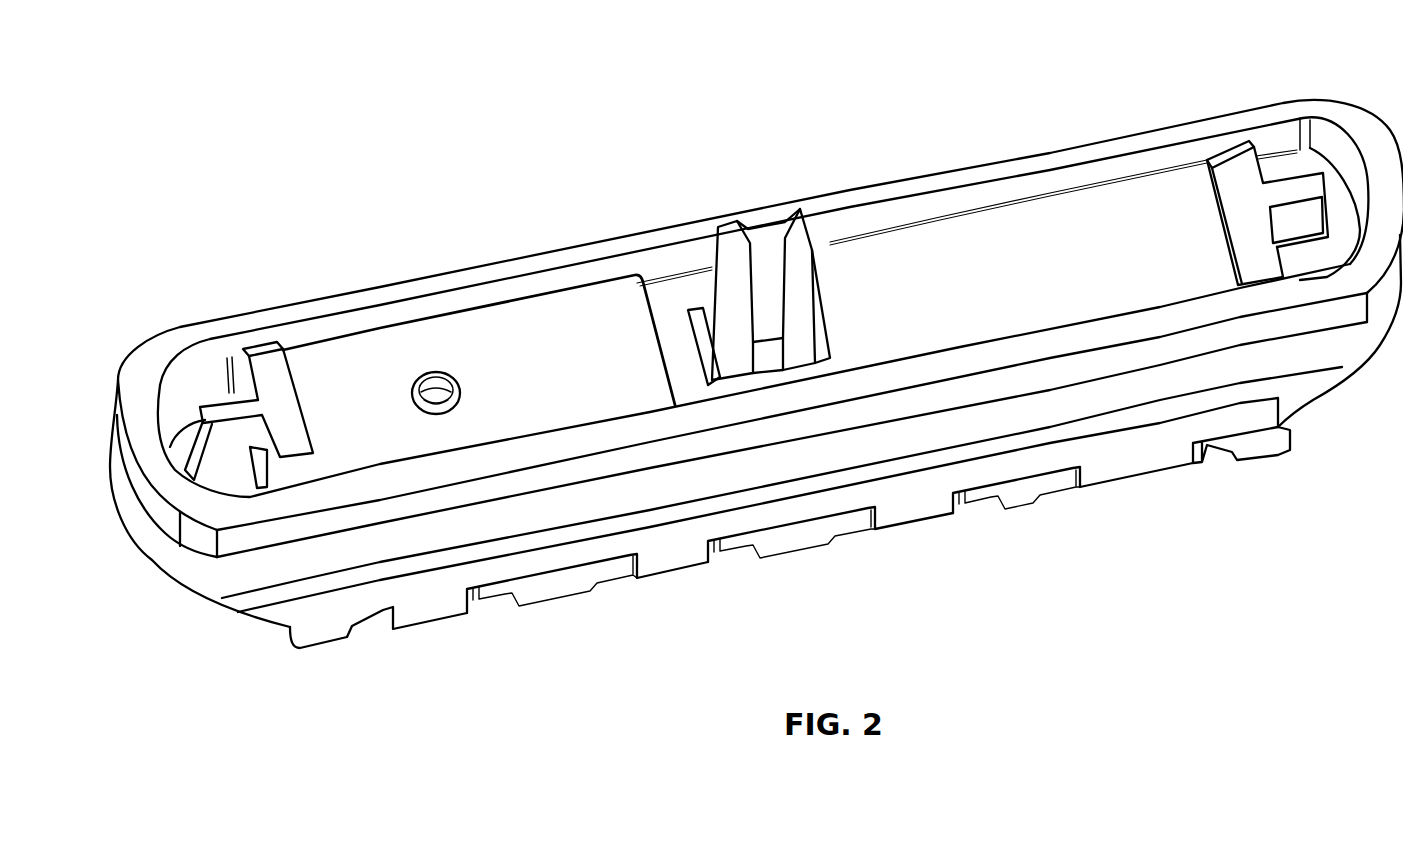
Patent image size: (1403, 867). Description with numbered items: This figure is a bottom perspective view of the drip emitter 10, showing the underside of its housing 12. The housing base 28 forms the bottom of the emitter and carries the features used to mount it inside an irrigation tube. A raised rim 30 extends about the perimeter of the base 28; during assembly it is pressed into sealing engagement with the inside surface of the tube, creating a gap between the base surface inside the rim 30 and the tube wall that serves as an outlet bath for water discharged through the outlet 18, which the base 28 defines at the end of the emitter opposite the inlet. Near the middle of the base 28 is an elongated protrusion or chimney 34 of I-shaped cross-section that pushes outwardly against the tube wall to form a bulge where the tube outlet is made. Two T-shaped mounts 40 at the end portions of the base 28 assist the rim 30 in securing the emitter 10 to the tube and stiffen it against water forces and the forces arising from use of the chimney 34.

The emitter 10 is at (284, 140).
The housing 12 is at (240, 567).
The outlet 18 is at (440, 391).
The housing base 28 is at (1050, 223).
The raised rim 30 is at (900, 190).
The chimney 34 is at (762, 230).
The T-shaped mounts 40 is at (1243, 167).